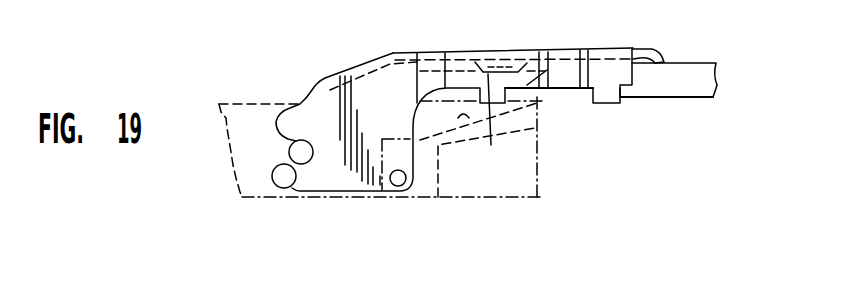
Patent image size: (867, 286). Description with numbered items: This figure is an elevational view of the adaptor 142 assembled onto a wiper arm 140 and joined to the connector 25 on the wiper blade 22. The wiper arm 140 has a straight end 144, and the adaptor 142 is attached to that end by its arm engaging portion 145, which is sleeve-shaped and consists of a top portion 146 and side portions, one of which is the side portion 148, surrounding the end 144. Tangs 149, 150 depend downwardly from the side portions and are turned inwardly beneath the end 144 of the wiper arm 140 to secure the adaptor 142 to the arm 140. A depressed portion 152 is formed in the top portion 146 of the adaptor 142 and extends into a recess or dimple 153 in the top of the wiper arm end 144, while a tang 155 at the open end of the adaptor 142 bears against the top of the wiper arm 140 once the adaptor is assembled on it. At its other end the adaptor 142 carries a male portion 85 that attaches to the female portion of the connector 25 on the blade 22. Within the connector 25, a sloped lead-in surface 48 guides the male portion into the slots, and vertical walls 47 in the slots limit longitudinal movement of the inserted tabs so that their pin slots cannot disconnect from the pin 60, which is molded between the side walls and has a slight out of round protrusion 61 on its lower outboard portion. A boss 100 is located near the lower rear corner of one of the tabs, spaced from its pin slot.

The wiper blade 22 is at (237, 117).
The connector 25 is at (298, 100).
The vertical walls 47 is at (413, 197).
The sloped lead-in surface 48 is at (469, 119).
The pin 60 is at (305, 153).
The out of round protrusion 61 is at (293, 168).
The male portion 85 is at (331, 76).
The boss 100 is at (397, 187).
The wiper arm 140 is at (697, 73).
The adaptor 142 is at (596, 48).
The straight end 144 is at (648, 82).
The arm engaging portion 145 is at (551, 51).
The top portion 146 is at (458, 51).
The side portion 148 is at (562, 78).
The tang 149 is at (610, 92).
The tang 150 is at (491, 145).
The depressed portion 152 is at (507, 52).
The recess or dimple 153 is at (541, 98).
The tang 155 is at (656, 50).